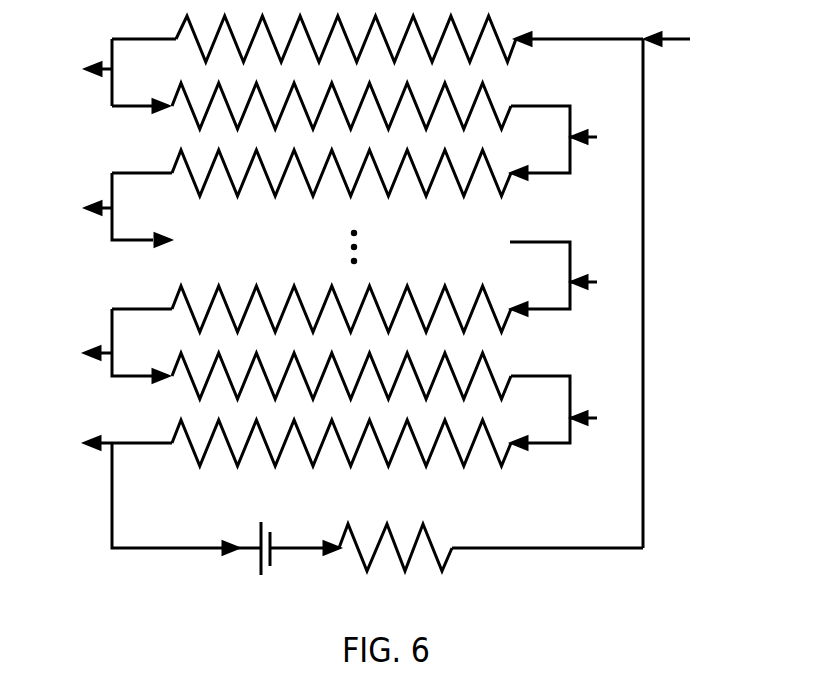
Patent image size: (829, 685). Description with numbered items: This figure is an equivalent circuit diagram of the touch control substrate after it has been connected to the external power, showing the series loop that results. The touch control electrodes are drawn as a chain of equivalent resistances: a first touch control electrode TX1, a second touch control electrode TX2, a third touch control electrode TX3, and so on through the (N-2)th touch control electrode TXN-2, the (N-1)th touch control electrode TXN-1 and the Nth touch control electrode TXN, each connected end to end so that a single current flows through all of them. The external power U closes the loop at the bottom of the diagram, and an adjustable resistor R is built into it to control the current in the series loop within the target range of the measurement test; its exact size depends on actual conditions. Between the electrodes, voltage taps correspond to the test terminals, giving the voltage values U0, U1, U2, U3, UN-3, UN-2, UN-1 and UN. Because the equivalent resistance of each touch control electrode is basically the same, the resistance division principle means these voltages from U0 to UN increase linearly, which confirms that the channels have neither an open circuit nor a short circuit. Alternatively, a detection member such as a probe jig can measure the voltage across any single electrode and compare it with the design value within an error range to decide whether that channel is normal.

The first touch control electrode TX1 is at (321, 35).
The second touch control electrode TX2 is at (346, 126).
The third touch control electrode TX3 is at (311, 170).
The (N-2)th touch control electrode TXN-2 is at (341, 287).
The (N-1)th touch control electrode TXN-1 is at (345, 396).
The Nth touch control electrode TXN is at (311, 438).
The voltage value U0 is at (687, 40).
The voltage value U1 is at (84, 69).
The voltage value U2 is at (600, 137).
The voltage value U3 is at (84, 209).
The voltage value UN-3 is at (605, 284).
The voltage value UN-2 is at (78, 356).
The voltage value UN-1 is at (608, 421).
The voltage value UN is at (80, 444).
The external power U is at (282, 547).
The adjustable resistor R is at (395, 532).